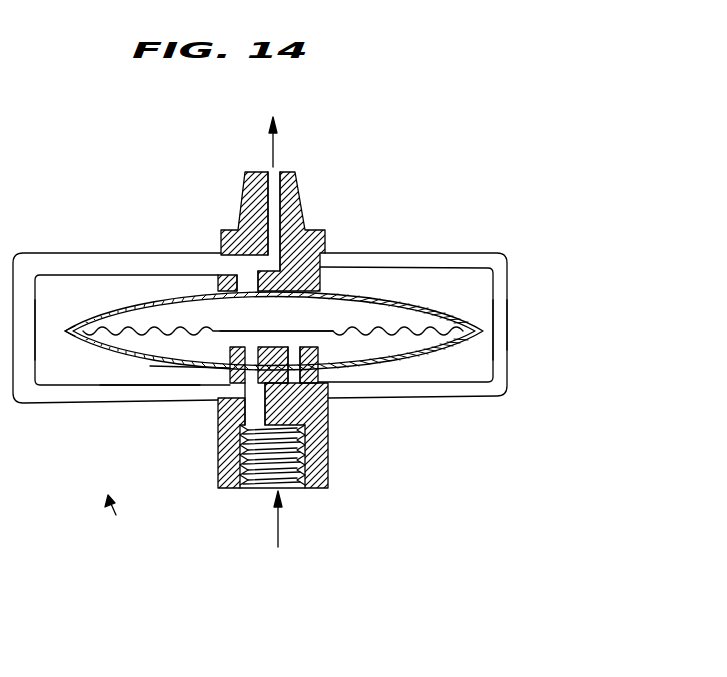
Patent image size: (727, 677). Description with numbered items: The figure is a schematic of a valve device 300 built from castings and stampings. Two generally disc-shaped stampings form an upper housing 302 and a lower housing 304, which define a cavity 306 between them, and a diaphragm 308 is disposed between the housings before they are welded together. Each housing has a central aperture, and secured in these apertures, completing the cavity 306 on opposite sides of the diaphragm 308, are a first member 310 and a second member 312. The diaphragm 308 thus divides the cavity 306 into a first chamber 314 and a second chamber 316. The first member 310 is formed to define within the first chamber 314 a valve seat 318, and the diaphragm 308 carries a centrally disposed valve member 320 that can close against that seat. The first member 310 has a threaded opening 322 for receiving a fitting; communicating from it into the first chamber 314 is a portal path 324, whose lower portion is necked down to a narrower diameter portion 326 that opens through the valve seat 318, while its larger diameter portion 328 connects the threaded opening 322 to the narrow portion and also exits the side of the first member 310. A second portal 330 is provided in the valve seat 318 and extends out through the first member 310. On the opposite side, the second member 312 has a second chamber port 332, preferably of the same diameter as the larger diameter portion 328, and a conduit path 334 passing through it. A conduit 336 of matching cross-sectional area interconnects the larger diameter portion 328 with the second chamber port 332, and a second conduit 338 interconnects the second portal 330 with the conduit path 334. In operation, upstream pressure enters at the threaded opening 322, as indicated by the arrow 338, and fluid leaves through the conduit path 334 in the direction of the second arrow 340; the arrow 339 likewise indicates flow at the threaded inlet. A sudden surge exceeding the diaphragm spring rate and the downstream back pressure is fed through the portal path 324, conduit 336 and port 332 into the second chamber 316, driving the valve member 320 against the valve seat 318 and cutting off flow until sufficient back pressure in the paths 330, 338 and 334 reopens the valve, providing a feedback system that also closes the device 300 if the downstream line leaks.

The valve device 300 is at (116, 515).
The upper housing 302 is at (412, 300).
The lower housing 304 is at (445, 355).
The cavity 306 is at (138, 322).
The diaphragm 308 is at (100, 337).
The first member 310 is at (332, 472).
The second member 312 is at (300, 197).
The first chamber 314 is at (273, 343).
The second chamber 316 is at (274, 331).
The valve seat 318 is at (365, 375).
The valve member 320 is at (278, 312).
The threaded opening 322 is at (297, 488).
The portal path 324 is at (268, 415).
The narrower diameter portion 326 is at (220, 373).
The larger diameter portion 328 is at (218, 427).
The second portal 330 is at (323, 387).
The second chamber port 332 is at (244, 290).
The conduit path 334 is at (272, 182).
The conduit 336 is at (147, 403).
The second conduit 338 is at (502, 327).
The flow direction arrow 339 is at (275, 535).
The second arrow 340 is at (272, 145).